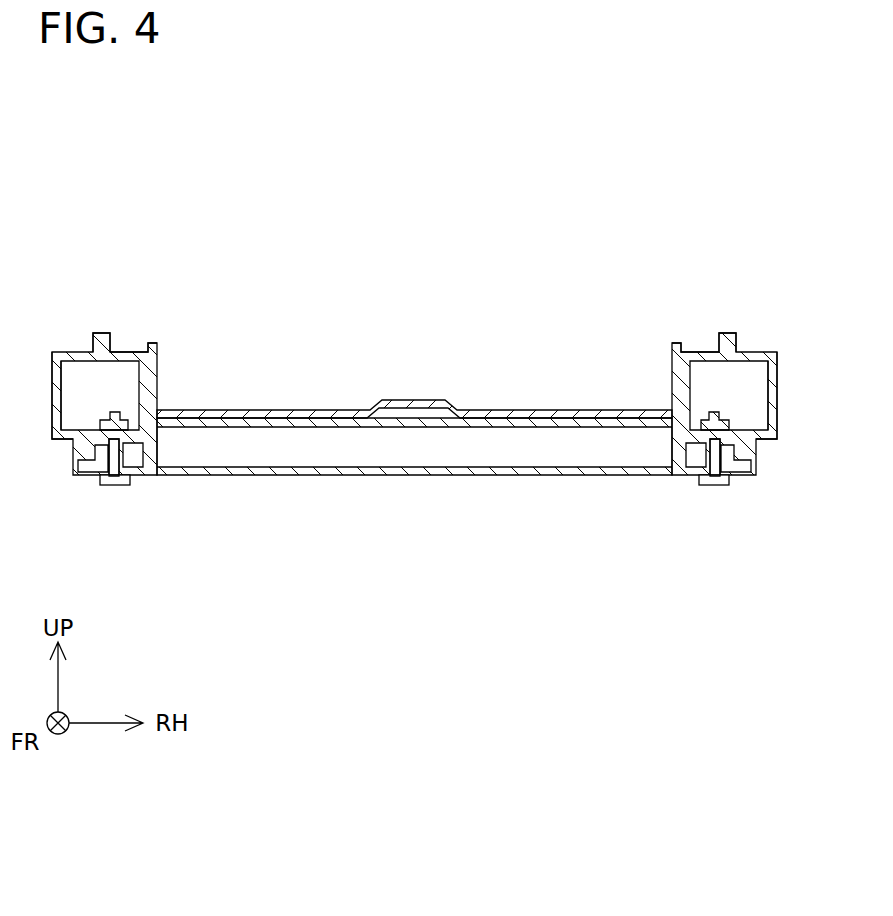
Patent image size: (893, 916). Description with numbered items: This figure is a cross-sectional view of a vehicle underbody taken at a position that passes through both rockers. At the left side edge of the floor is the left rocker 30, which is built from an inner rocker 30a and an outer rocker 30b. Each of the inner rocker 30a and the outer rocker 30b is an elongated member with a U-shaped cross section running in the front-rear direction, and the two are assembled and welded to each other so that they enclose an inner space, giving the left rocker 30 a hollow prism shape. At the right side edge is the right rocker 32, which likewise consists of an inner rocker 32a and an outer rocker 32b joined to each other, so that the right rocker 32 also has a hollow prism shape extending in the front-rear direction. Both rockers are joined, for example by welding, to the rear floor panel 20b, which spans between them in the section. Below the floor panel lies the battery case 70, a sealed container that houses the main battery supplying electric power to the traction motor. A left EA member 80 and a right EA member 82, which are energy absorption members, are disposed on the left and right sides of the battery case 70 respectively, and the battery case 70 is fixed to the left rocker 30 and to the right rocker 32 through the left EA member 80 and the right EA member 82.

The rear floor panel 20b is at (278, 410).
The left rocker 30 is at (99, 348).
The inner rocker 30a is at (125, 310).
The outer rocker 30b is at (80, 350).
The right rocker 32 is at (728, 348).
The inner rocker 32a is at (704, 310).
The outer rocker 32b is at (749, 349).
The battery case 70 is at (453, 476).
The left EA member 80 is at (133, 476).
The right EA member 82 is at (696, 476).